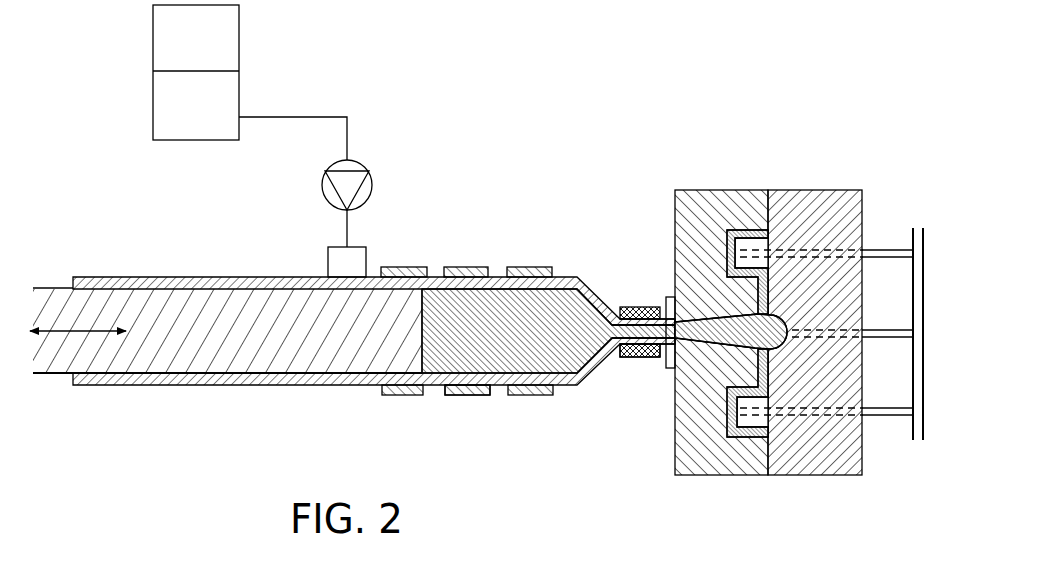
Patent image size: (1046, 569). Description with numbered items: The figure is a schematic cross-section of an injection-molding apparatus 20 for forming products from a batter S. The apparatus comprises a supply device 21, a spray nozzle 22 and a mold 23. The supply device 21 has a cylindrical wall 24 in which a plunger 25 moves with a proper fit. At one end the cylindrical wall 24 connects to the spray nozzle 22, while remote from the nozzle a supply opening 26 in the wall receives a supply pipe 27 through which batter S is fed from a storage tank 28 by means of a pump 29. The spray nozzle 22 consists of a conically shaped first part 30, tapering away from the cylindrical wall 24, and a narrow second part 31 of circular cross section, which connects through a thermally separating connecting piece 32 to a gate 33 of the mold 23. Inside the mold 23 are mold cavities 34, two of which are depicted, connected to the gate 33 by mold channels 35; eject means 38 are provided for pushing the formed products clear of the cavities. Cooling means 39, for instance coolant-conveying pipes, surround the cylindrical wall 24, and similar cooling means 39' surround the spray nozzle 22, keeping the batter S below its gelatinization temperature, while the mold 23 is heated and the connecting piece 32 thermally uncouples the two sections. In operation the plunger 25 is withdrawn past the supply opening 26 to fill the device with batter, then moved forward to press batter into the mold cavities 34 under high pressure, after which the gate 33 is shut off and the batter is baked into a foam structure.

The injection-molding apparatus 20 is at (227, 452).
The supply device 21 is at (167, 406).
The spray nozzle 22 is at (634, 292).
The mold 23 is at (728, 178).
The cylindrical wall 24 is at (496, 397).
The plunger 25 is at (152, 330).
The supply opening 26 is at (340, 268).
The supply pipe 27 is at (347, 225).
The storage tank 28 is at (182, 121).
The pump 29 is at (323, 188).
The first part 30 is at (595, 380).
The second part 31 is at (643, 388).
The thermally separating connecting piece 32 is at (671, 372).
The gate 33 is at (676, 297).
The mold cavities 34 is at (745, 437).
The mold channels 35 is at (763, 295).
The eject means 38 is at (918, 378).
The cooling means 39 is at (467, 340).
The cooling means 39' is at (619, 446).
The batter S is at (537, 312).